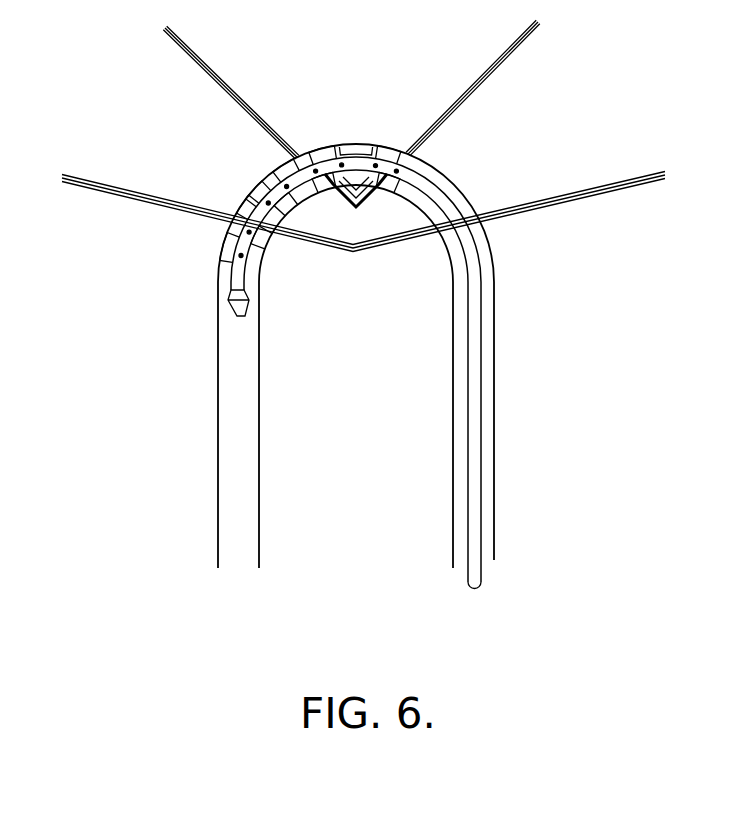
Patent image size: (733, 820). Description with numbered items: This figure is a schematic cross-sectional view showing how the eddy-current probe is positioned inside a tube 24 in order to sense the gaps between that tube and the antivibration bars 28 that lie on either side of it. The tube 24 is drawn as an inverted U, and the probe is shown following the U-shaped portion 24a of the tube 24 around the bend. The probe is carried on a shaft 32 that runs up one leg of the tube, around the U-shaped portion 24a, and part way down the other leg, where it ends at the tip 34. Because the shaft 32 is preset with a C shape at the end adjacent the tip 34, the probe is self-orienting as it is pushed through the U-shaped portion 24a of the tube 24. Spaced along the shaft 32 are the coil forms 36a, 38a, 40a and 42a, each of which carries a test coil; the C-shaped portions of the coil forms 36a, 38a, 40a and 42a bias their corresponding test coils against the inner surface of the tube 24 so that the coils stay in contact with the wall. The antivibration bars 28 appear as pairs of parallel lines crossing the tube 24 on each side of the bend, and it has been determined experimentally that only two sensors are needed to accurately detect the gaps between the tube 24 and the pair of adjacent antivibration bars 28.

The tube 24 is at (334, 356).
The U-shaped portion of the tube 24a is at (448, 182).
The antivibration bars 28 is at (494, 82).
The shaft 32 is at (480, 311).
The tip 34 is at (232, 312).
The coil form 36a is at (228, 249).
The coil form 38a is at (260, 196).
The coil form 40a is at (345, 150).
The coil form 42a is at (373, 150).